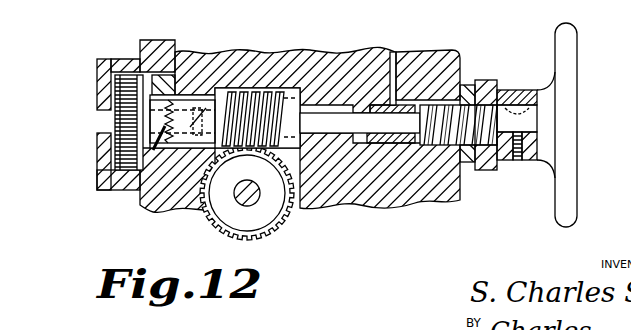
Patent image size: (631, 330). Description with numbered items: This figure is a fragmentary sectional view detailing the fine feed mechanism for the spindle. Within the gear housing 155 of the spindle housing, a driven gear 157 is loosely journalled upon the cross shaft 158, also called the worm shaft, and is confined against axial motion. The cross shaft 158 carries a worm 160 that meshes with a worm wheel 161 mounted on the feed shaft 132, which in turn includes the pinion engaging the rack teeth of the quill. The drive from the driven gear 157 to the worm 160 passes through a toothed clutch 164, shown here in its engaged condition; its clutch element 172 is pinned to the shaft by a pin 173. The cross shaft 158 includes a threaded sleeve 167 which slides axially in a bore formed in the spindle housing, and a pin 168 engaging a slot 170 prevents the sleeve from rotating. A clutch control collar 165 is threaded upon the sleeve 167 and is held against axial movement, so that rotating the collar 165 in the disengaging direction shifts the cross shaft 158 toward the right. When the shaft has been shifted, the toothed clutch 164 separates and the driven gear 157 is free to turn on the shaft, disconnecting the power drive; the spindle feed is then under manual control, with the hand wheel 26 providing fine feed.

The hand wheel 26 is at (579, 96).
The feed shaft 132 is at (238, 197).
The gear housing 155 is at (97, 89).
The driven gear 157 is at (112, 160).
The cross shaft 158 is at (338, 125).
The worm 160 is at (265, 88).
The worm wheel 161 is at (276, 228).
The toothed clutch 164 is at (153, 150).
The collar 165 is at (486, 82).
The threaded sleeve 167 is at (414, 120).
The pin 168 is at (414, 56).
The slot 170 is at (380, 100).
The clutch element 172 is at (185, 108).
The pin 173 is at (222, 80).